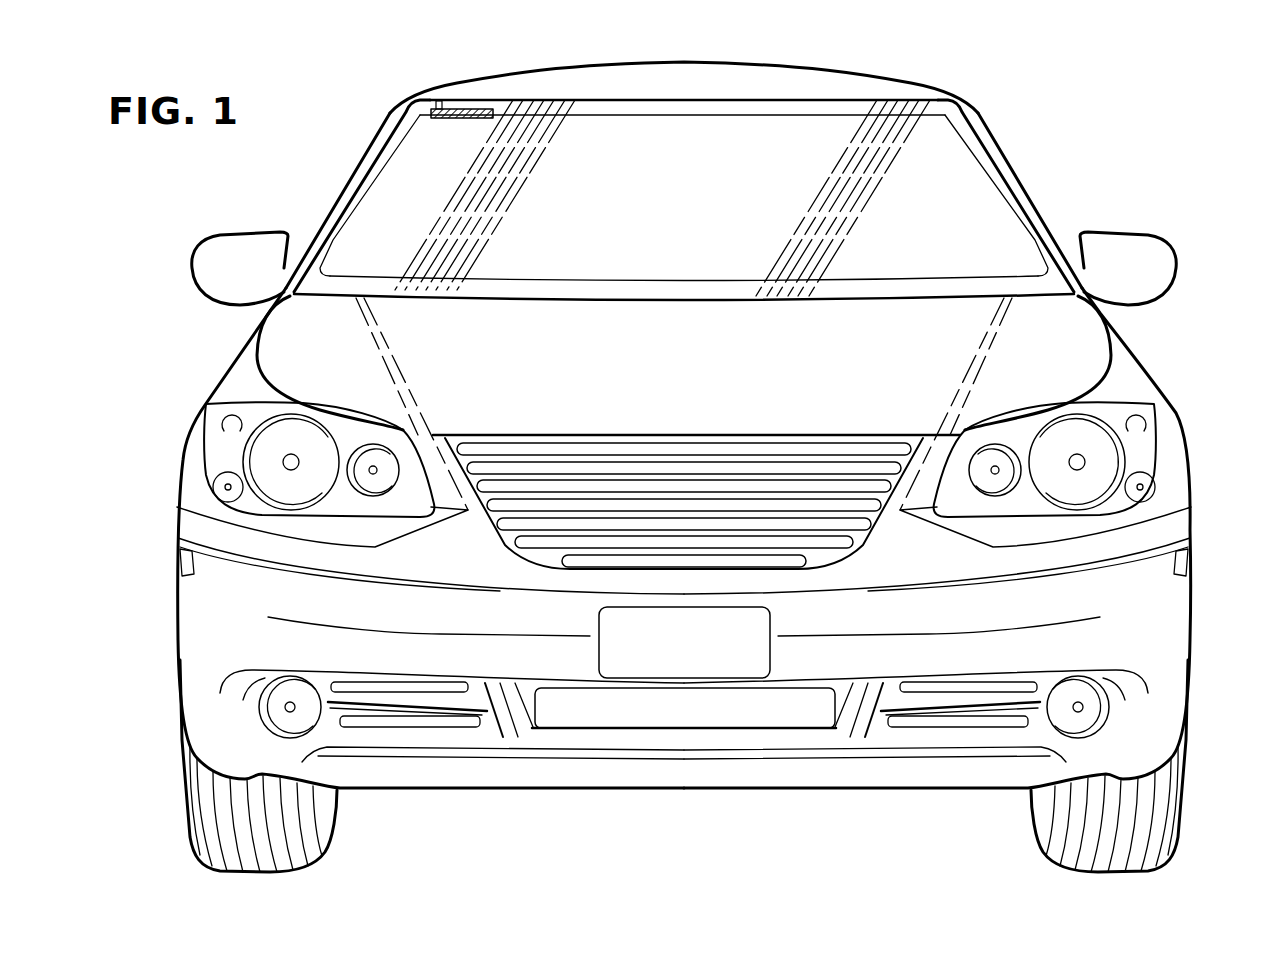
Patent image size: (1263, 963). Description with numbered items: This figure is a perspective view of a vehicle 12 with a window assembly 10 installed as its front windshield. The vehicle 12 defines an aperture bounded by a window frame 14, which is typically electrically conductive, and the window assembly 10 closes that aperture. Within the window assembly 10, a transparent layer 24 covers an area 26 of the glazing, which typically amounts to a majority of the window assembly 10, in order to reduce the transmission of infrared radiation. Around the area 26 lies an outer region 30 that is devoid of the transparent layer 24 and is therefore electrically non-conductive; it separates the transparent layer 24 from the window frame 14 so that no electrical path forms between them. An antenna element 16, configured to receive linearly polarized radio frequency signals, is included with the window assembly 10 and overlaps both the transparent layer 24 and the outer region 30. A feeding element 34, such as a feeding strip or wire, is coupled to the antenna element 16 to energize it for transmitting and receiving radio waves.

The window assembly 10 is at (1017, 137).
The vehicle 12 is at (992, 52).
The window frame 14 is at (1040, 213).
The antenna element 16 is at (468, 112).
The transparent layer 24 is at (380, 208).
The area 26 is at (793, 130).
The outer region 30 is at (305, 287).
The feeding element 34 is at (437, 106).